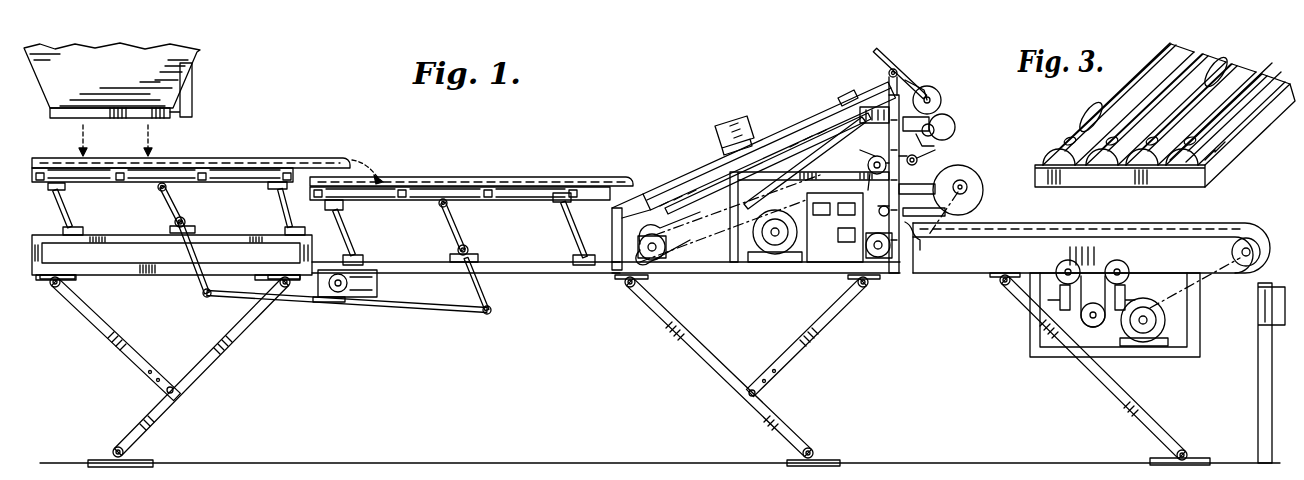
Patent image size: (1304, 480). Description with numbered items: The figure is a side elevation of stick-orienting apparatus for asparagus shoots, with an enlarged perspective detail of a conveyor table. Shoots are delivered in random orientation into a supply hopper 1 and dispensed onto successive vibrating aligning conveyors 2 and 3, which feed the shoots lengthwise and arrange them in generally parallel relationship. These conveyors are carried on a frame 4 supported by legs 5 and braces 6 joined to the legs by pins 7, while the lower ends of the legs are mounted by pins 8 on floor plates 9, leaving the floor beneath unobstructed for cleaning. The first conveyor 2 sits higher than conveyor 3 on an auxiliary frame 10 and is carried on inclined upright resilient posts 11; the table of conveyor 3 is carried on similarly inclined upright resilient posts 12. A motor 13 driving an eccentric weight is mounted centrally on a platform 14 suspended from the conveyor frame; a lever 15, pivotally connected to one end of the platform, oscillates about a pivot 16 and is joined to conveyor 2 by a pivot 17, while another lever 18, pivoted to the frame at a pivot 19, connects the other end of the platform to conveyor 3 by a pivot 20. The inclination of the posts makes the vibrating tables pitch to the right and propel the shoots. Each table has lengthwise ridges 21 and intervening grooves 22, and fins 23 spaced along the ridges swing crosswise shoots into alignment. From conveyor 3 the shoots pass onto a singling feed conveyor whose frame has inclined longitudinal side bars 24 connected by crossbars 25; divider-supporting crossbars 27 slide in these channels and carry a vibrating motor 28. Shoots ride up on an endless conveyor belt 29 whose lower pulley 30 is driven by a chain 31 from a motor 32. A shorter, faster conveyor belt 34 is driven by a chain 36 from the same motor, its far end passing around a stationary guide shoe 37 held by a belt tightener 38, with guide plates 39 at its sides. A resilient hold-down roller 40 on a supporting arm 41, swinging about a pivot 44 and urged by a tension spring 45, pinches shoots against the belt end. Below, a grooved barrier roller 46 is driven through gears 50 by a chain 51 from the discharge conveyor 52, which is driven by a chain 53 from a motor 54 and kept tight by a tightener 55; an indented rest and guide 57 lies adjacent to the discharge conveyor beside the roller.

In FIG. 1, the supply hopper 1 is at (192, 62).
In FIG. 1, the first aligning conveyor 2 is at (200, 158).
In FIG. 1, the second aligning conveyor 3 is at (478, 178).
In FIG. 3, the second aligning conveyor 3 is at (1167, 185).
In FIG. 1, the frame 4 is at (545, 274).
In FIG. 1, the legs 5 is at (222, 356).
In FIG. 1, the braces 6 is at (84, 314).
In FIG. 1, the pins 7 is at (178, 396).
In FIG. 1, the pins 8 is at (114, 449).
In FIG. 1, the floor plates 9 is at (140, 458).
In FIG. 1, the auxiliary frame 10 is at (140, 240).
In FIG. 1, the upright resilient posts 11 is at (64, 206).
In FIG. 1, the upright resilient posts 12 is at (342, 226).
In FIG. 1, the motor 13 is at (336, 300).
In FIG. 1, the platform 14 is at (394, 310).
In FIG. 1, the lever 15 is at (200, 293).
In FIG. 1, the pivot 16 is at (185, 222).
In FIG. 1, the pivot 17 is at (158, 188).
In FIG. 1, the lever 18 is at (488, 300).
In FIG. 1, the pivot 19 is at (468, 250).
In FIG. 1, the pivot 20 is at (440, 205).
In FIG. 3, the ridges 21 is at (1216, 140).
In FIG. 3, the grooves 22 is at (1118, 186).
In FIG. 3, the fins 23 is at (1078, 108).
In FIG. 1, the longitudinal side bars 24 is at (696, 182).
In FIG. 1, the crossbars 25 is at (846, 88).
In FIG. 1, the crossbars 27 is at (846, 108).
In FIG. 1, the vibrating motor 28 is at (726, 126).
In FIG. 1, the endless conveyor belt 29 is at (804, 134).
In FIG. 1, the lower pulley 30 is at (662, 238).
In FIG. 1, the chain 31 is at (656, 268).
In FIG. 1, the motor 32 is at (780, 256).
In FIG. 1, the conveyor belt 34 is at (768, 172).
In FIG. 1, the chain 36 is at (840, 262).
In FIG. 1, the stationary guide shoe 37 is at (924, 154).
In FIG. 1, the belt tightener 38 is at (930, 140).
In FIG. 1, the guide plates 39 is at (954, 122).
In FIG. 1, the hold-down roller 40 is at (941, 98).
In FIG. 1, the supporting arm 41 is at (892, 52).
In FIG. 1, the pivot 44 is at (889, 72).
In FIG. 1, the tension spring 45 is at (924, 88).
In FIG. 1, the barrier roller 46 is at (968, 178).
In FIG. 1, the gears 50 is at (968, 186).
In FIG. 1, the chain 51 is at (950, 216).
In FIG. 1, the discharge conveyor 52 is at (1176, 228).
In FIG. 1, the chain 53 is at (1244, 266).
In FIG. 1, the motor 54 is at (1146, 340).
In FIG. 1, the tightener 55 is at (1082, 316).
In FIG. 1, the rest and guide 57 is at (886, 260).